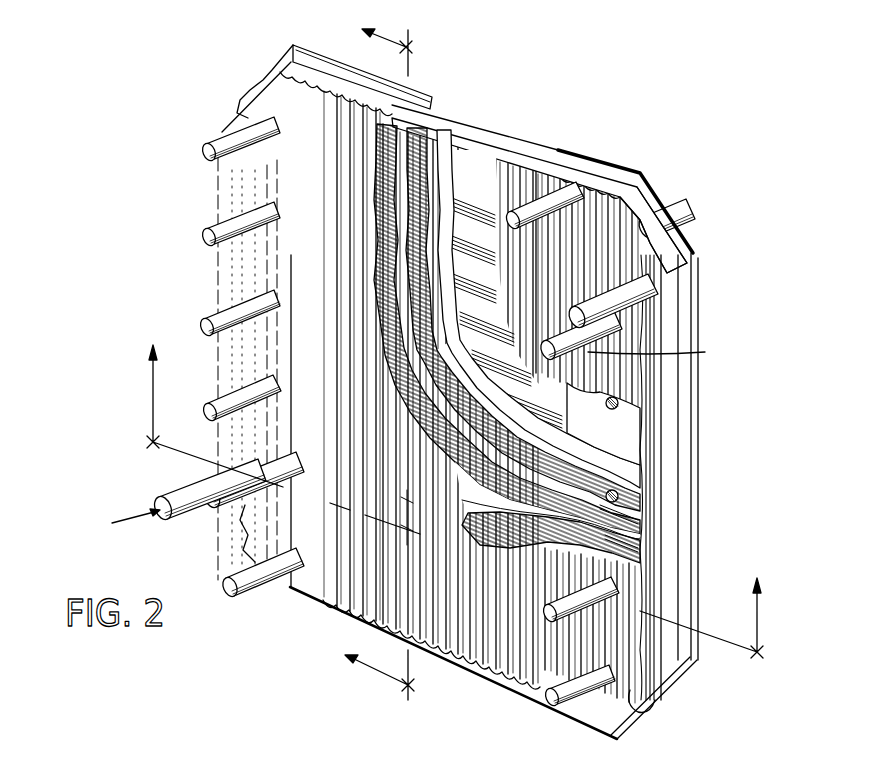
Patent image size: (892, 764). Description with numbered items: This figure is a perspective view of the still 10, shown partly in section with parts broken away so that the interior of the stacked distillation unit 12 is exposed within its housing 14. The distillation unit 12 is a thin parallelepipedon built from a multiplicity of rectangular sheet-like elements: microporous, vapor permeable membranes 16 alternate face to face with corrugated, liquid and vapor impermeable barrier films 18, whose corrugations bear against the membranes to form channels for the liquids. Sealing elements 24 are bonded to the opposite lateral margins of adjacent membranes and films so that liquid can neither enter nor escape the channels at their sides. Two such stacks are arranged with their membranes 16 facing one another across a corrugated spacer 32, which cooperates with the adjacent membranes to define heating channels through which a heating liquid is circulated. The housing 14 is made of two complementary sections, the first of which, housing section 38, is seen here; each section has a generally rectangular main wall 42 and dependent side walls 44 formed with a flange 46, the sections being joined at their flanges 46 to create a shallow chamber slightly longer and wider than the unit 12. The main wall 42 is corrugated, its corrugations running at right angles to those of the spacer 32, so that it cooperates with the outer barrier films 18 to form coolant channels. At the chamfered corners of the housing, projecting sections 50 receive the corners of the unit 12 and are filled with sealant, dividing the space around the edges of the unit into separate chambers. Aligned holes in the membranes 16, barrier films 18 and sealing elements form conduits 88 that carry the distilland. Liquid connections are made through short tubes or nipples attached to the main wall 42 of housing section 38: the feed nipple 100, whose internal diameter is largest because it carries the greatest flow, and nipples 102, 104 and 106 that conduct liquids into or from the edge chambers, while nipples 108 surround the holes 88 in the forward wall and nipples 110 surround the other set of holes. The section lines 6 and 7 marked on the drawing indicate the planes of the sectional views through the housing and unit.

The still 10 is at (210, 270).
The multiple stage distillation unit 12 is at (693, 575).
The housing 14 is at (697, 318).
The microporous vapor permeable membrane 16 is at (630, 543).
The barrier film 18 is at (617, 478).
The sealing element 24 is at (428, 150).
The corrugated spacer 32 is at (467, 180).
The first housing section 38 is at (298, 68).
The main wall 42 is at (282, 352).
The side wall 44 is at (362, 93).
The flange 46 is at (322, 62).
The projecting section 50 is at (243, 108).
The conduit 88 is at (618, 405).
The feed nipple 100 is at (190, 512).
The nipple 102 is at (683, 252).
The nipple 104 is at (247, 594).
The nipple 106 is at (567, 183).
The nipple 108 is at (527, 337).
The nipple 110 is at (218, 137).
The section line 6- 6 is at (396, 366).
The section line 7- 7 is at (454, 520).